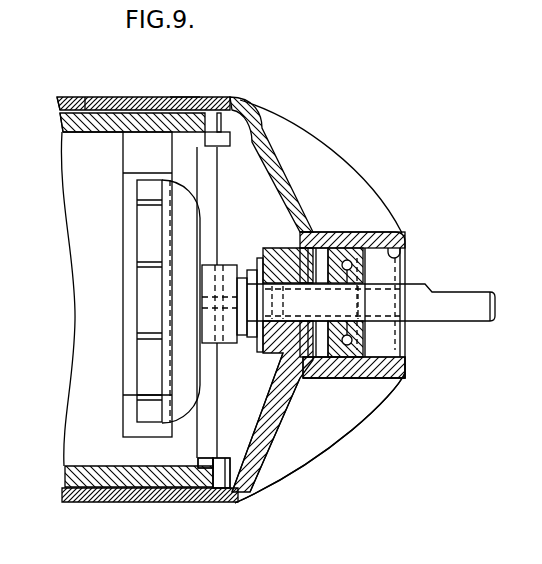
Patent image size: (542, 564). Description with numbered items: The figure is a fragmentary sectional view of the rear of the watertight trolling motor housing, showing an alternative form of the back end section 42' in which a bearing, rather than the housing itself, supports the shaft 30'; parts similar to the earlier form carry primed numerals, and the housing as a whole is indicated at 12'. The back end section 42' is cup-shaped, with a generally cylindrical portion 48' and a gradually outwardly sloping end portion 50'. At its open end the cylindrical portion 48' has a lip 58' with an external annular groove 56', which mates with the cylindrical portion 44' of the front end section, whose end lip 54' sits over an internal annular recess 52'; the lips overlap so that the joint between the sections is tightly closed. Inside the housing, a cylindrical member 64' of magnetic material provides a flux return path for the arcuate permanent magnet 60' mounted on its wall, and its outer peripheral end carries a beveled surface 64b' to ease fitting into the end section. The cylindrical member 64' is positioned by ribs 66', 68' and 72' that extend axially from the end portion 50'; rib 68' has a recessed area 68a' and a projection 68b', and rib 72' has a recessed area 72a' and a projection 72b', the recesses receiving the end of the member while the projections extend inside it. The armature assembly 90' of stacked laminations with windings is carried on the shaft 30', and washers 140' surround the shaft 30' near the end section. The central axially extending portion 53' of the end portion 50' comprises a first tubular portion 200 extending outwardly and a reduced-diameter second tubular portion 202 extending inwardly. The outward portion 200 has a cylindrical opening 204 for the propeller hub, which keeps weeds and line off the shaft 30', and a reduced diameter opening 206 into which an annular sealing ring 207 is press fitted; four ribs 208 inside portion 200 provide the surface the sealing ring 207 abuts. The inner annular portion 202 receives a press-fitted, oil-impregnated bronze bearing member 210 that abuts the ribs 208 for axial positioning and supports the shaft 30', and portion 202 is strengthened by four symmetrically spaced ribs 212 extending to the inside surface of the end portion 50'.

The housing 12' is at (202, 68).
The shaft 30' is at (371, 320).
The back end section 42' is at (150, 502).
The cylindrical portion 44' is at (52, 340).
The cylindrical portion 48' is at (143, 87).
The end portion 50' is at (320, 301).
The internal annular recess 52' is at (66, 139).
The axially extending portion 53' is at (335, 438).
The end lip 54' is at (132, 90).
The external annular groove 56' is at (102, 76).
The lip 58' is at (49, 88).
The permanent magnet 60' is at (147, 284).
The cylindrical member 64' is at (93, 154).
The beveled surface 64b' is at (236, 99).
The rib 66' is at (231, 323).
The rib 68' is at (271, 157).
The recessed area 68a' is at (196, 297).
The projection 68b' is at (212, 302).
The rib 72' is at (255, 466).
The recessed area 72a' is at (238, 455).
The projection 72b' is at (195, 446).
The armature assembly 90' is at (123, 301).
The washers 140' is at (243, 292).
The first tubular portion 200 is at (360, 232).
The second tubular portion 202 is at (270, 368).
The cylindrical opening 204 is at (403, 255).
The reduced diameter cylindrical opening 206 is at (357, 378).
The sealing ring 207 is at (350, 263).
The ribs 208 is at (330, 250).
The bearing member 210 is at (303, 240).
The ribs 212 is at (287, 253).